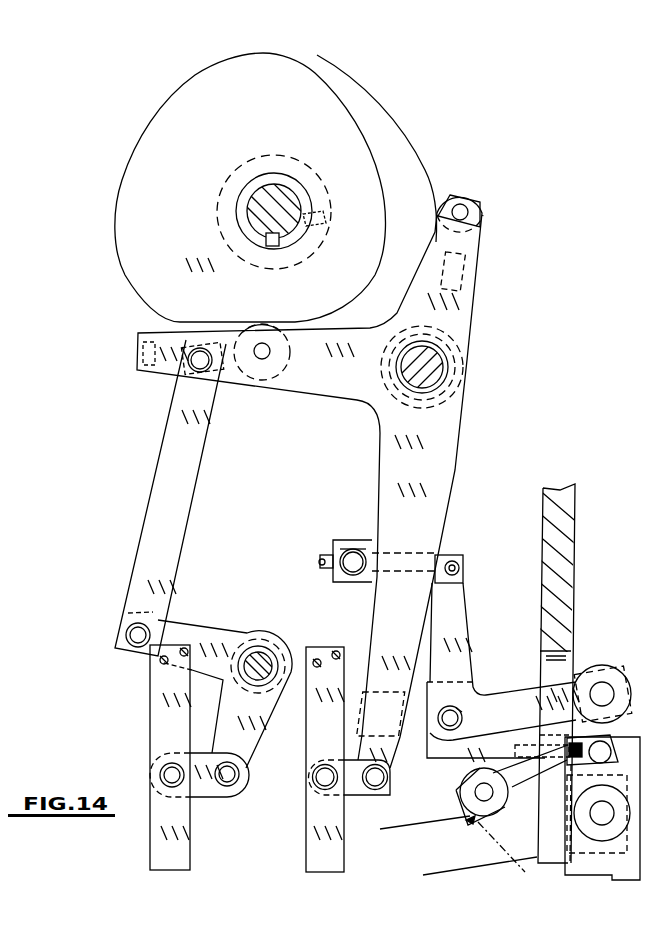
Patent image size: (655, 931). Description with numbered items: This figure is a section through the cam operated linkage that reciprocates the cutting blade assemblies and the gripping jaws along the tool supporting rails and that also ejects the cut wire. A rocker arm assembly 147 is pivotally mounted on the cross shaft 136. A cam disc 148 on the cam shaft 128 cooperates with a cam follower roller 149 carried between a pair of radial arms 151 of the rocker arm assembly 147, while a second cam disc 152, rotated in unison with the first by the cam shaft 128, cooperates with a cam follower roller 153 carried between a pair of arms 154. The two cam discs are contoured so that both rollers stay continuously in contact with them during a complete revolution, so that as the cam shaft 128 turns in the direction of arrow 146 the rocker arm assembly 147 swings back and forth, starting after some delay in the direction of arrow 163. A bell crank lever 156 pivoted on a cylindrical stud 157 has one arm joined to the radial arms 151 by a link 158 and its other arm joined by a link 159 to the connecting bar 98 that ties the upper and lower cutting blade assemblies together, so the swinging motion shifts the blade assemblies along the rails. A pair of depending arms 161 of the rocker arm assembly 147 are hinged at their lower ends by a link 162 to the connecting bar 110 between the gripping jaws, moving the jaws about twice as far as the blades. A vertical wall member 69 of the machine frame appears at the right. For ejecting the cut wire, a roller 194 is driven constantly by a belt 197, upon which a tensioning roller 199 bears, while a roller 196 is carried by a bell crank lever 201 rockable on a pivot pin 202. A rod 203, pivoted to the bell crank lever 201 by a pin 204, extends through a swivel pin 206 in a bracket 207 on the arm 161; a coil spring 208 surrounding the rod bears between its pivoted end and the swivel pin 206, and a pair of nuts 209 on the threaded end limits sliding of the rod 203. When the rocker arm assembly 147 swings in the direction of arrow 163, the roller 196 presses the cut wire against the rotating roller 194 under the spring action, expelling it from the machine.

The vertical wall member 69 is at (574, 558).
The connecting bar 98 is at (151, 697).
The connecting bar 110 is at (303, 840).
The cam shaft 128 is at (290, 195).
The cross shaft 136 is at (432, 367).
The arrow 146 is at (220, 120).
The rocker arm assembly 147 is at (452, 426).
The cam disc 148 is at (130, 276).
The cam follower roller 149 is at (264, 382).
The radial arms 151 is at (158, 376).
The cam disc 152 is at (418, 139).
The cam follower roller 153 is at (483, 212).
The arms 154 is at (467, 305).
The bell crank lever 156 is at (187, 626).
The cylindrical stud 157 is at (263, 634).
The link 158 is at (190, 480).
The link 159 is at (198, 797).
The depending arms 161 is at (447, 495).
The link 162 is at (347, 795).
The arrow 163 is at (370, 440).
The roller 194 is at (578, 820).
The roller 196 is at (596, 670).
The belt 197 is at (420, 829).
The tensioning roller 199 is at (462, 782).
The bell crank lever 201 is at (463, 605).
The pivot pin 202 is at (462, 716).
The rod 203 is at (320, 560).
The pin 204 is at (458, 562).
The swivel pin 206 is at (353, 550).
The bracket 207 is at (338, 548).
The coil spring 208 is at (406, 557).
The nuts 209 is at (323, 554).